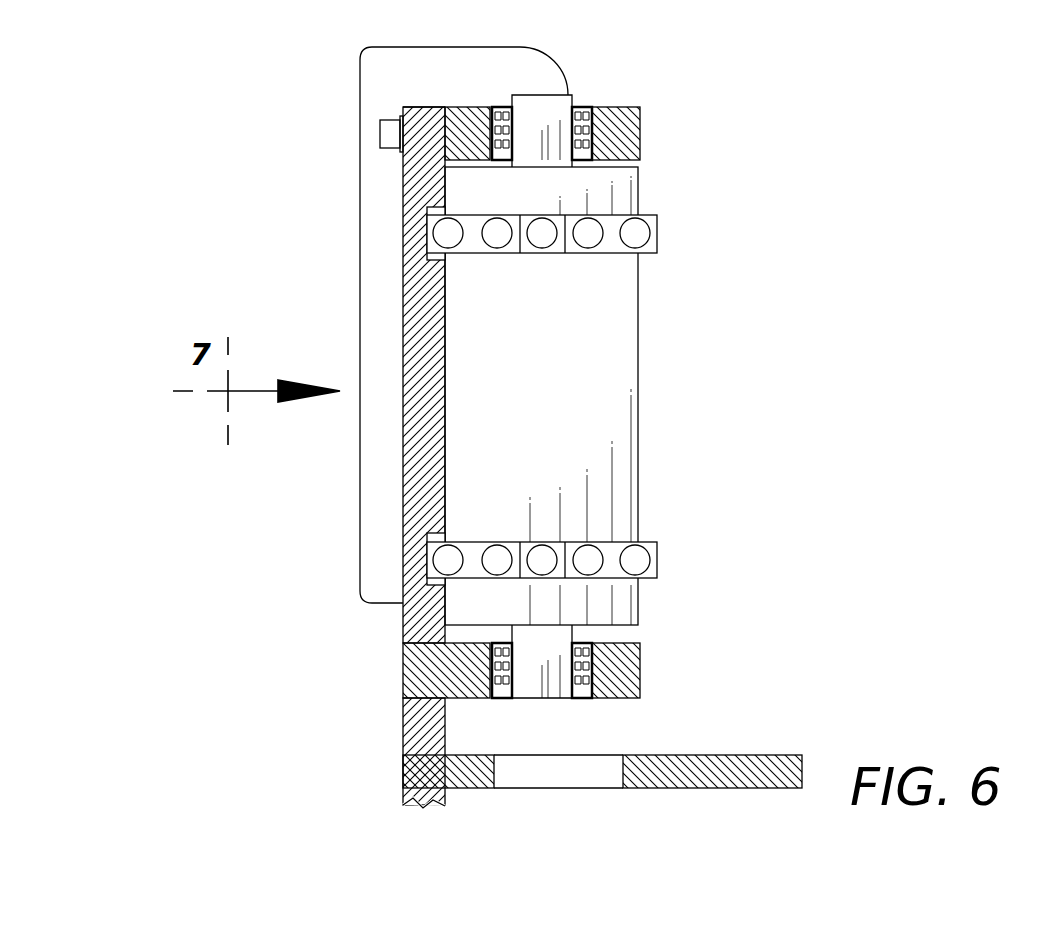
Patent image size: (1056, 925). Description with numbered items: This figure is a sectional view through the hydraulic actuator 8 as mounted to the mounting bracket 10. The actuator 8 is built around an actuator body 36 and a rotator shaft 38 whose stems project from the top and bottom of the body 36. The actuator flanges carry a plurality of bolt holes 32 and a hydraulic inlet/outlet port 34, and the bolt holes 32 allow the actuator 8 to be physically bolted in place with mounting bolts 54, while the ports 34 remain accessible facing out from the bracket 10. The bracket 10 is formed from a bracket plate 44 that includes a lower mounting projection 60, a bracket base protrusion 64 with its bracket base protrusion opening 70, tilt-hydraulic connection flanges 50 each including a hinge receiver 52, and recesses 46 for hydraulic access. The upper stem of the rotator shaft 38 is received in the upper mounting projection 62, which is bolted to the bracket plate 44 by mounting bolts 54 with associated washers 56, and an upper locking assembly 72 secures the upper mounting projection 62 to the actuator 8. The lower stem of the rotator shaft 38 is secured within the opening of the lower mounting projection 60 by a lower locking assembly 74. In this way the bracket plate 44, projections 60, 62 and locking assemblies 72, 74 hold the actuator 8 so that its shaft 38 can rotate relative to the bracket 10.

The hydraulic actuator 8 is at (697, 330).
The mounting bracket 10 is at (322, 228).
The bolt holes 32 is at (472, 232).
The hydraulic inlet/outlet port 34 is at (542, 232).
The actuator body 36 is at (549, 381).
The rotator shaft 38 is at (550, 93).
The bracket plate 44 is at (403, 665).
The recesses 46 is at (432, 210).
The tilt-hydraulic connection flanges 50 is at (360, 63).
The hinge receiver 52 is at (517, 85).
The mounting bolts 54 is at (380, 128).
The washers 56 is at (403, 110).
The lower mounting projection 60 is at (640, 643).
The upper mounting projection 62 is at (618, 107).
The bracket base protrusion 64 is at (802, 755).
The bracket base protrusion opening 70 is at (570, 770).
The upper locking assembly 72 is at (582, 103).
The lower locking assembly 74 is at (580, 699).